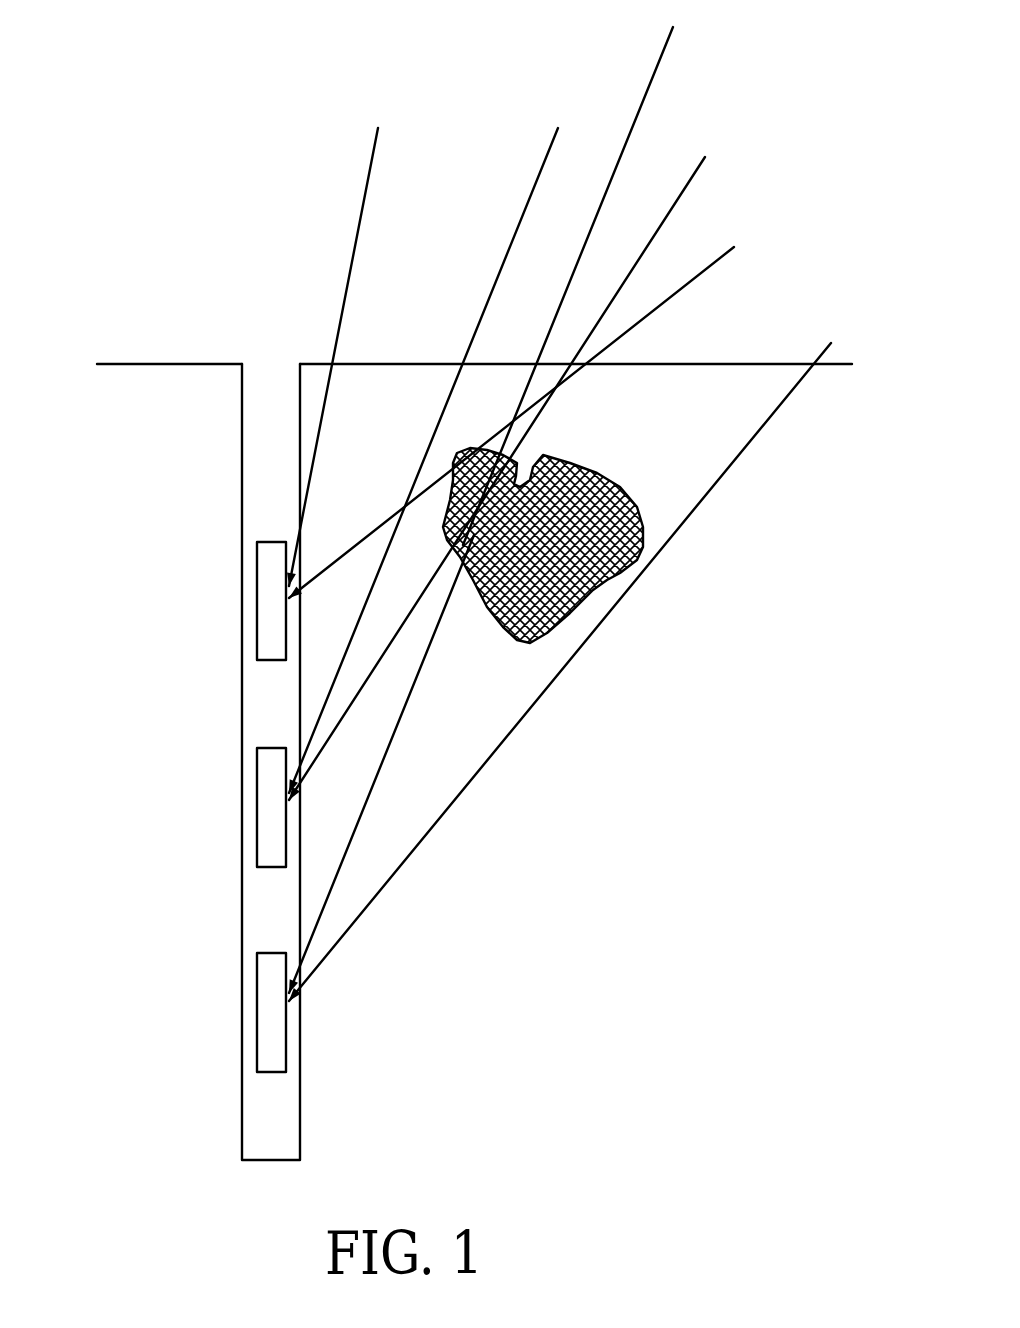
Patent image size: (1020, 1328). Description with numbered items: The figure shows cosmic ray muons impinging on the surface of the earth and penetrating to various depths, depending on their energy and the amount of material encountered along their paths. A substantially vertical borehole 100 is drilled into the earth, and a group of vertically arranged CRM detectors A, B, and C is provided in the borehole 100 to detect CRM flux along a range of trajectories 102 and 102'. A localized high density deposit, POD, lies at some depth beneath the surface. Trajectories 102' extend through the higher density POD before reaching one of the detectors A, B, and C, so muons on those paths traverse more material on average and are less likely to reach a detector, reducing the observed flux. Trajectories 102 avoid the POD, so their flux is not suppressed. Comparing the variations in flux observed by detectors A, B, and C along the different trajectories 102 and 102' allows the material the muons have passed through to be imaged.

The borehole 100 is at (268, 453).
The trajectories 102 is at (250, 357).
The trajectories 102' is at (538, 281).
The detector A is at (257, 600).
The detector B is at (258, 800).
The detector C is at (258, 1020).
The localized high density deposit POD is at (620, 580).